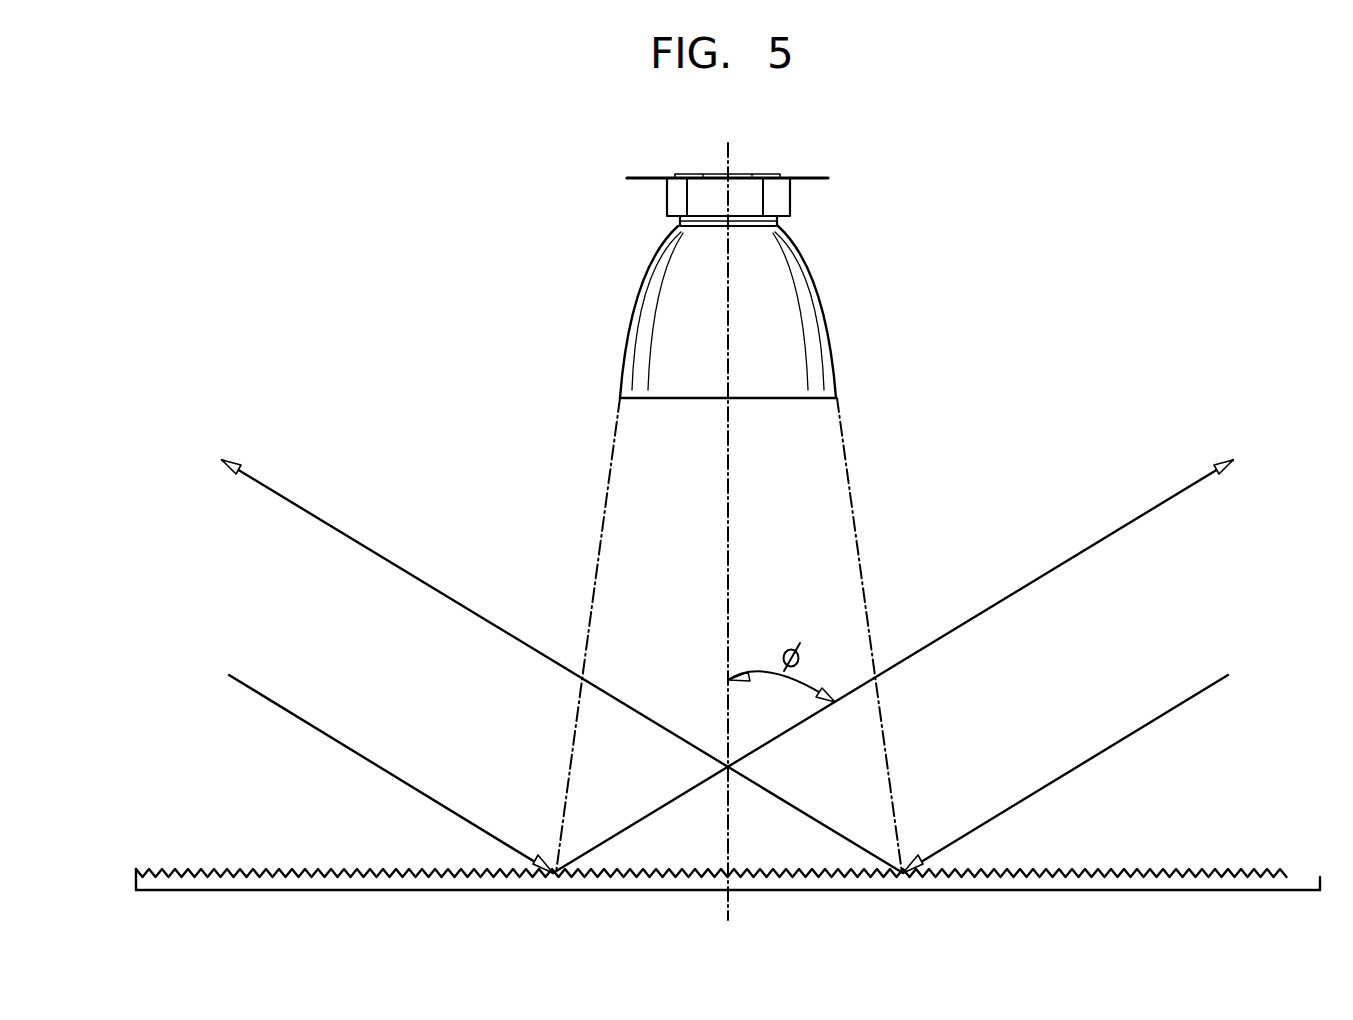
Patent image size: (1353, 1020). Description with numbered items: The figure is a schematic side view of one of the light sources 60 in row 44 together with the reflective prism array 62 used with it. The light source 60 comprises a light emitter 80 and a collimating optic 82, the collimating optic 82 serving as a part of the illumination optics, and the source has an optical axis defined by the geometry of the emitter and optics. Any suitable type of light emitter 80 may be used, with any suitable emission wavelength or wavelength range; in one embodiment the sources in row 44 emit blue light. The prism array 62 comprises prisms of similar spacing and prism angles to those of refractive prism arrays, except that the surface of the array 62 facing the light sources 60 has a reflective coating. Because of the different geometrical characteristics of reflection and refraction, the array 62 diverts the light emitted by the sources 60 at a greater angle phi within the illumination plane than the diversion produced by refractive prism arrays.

The row 44 is at (562, 170).
The light source 60 is at (845, 180).
The light emitter 80 is at (675, 197).
The collimating optic 82 is at (645, 318).
The reflective prism array 62 is at (1083, 868).